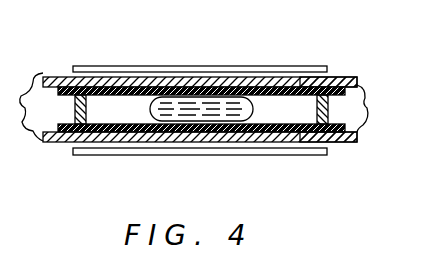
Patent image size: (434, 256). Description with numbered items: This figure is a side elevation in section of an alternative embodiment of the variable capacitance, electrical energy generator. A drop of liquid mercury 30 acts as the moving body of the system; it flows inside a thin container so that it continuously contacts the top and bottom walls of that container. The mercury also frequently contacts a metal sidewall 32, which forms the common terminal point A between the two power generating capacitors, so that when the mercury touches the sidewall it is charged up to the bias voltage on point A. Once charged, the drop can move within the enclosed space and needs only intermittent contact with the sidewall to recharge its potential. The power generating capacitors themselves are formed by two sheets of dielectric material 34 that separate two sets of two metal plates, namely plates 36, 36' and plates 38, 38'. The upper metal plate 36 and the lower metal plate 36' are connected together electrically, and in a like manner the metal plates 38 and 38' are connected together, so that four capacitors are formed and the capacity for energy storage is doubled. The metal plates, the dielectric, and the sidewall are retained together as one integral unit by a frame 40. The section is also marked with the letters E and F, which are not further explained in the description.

The drop of liquid mercury 30 is at (268, 75).
The frame 40 is at (305, 148).
The metal plate 38 is at (196, 55).
The metal plate 38' is at (200, 162).
The upper metal plate 36 is at (339, 54).
The lower metal plate 36' is at (348, 156).
The metal sidewall 32 is at (88, 95).
The sheets of dielectric material 34 is at (212, 98).
The common terminal point A is at (70, 112).
The edge E is at (360, 85).
The edge F is at (43, 141).